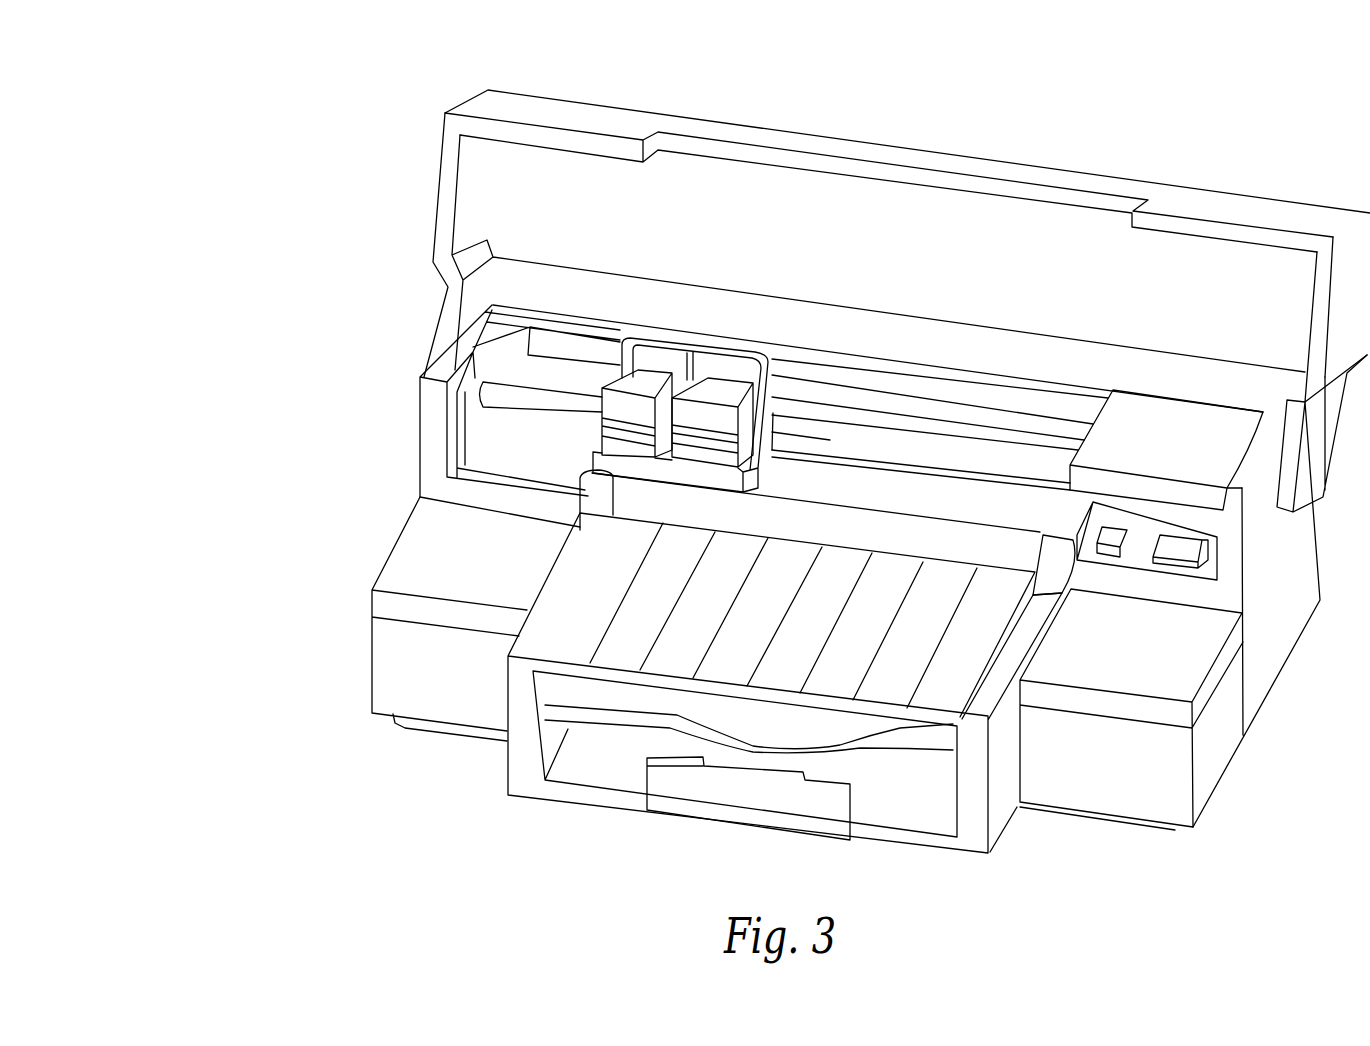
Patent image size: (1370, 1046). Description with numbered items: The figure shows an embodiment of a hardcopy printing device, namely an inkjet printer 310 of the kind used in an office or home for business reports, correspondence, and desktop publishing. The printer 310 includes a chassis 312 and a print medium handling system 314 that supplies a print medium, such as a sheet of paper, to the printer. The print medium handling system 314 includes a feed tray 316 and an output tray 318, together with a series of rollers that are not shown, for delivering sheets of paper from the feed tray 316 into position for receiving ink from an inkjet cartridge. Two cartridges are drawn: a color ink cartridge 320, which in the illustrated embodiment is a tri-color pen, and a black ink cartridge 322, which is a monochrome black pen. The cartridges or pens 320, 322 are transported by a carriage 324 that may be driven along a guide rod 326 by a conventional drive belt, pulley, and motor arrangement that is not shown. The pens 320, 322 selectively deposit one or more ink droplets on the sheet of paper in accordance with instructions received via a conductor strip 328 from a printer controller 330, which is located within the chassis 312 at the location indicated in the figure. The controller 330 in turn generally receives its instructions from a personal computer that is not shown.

The inkjet printer 310 is at (320, 97).
The chassis 312 is at (1213, 783).
The print medium handling system 314 is at (510, 819).
The feed tray 316 is at (617, 767).
The output tray 318 is at (823, 732).
The color ink cartridge 320 is at (713, 388).
The black ink cartridge 322 is at (637, 377).
The carriage 324 is at (697, 343).
The guide rod 326 is at (813, 438).
The conductor strip 328 is at (987, 423).
The printer controller 330 is at (1285, 665).